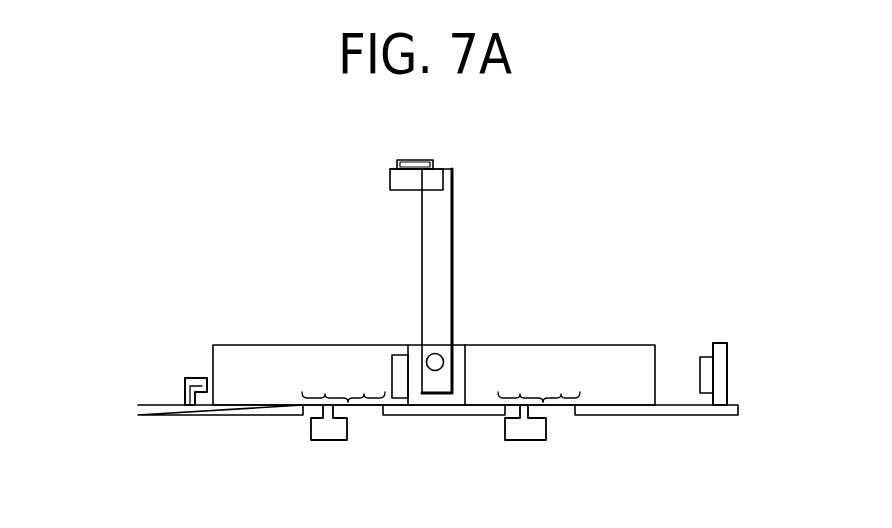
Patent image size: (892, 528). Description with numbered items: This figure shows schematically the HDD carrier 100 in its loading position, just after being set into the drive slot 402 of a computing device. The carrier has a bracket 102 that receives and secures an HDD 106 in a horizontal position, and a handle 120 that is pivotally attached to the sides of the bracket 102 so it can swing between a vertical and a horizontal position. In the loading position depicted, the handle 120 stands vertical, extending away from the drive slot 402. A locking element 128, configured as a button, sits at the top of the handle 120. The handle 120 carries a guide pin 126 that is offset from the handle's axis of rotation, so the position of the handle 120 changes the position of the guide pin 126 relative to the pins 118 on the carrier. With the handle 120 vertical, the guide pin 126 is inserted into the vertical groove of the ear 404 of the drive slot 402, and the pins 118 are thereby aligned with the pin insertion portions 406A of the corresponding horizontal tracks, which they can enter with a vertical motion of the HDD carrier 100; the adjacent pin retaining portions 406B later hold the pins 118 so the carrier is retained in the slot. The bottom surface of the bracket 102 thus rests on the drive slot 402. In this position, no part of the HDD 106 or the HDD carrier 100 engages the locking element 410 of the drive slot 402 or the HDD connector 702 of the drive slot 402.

The HDD carrier 100 is at (624, 213).
The bracket 102 is at (435, 343).
The HDD 106 is at (620, 345).
The pins 118 is at (311, 429).
The handle 120 is at (453, 223).
The guide pin 126 is at (435, 353).
The locking element 128 is at (422, 158).
The drive slot 402 is at (150, 432).
The ear 404 is at (409, 342).
The pin insertion portion 406A is at (326, 394).
The pin retaining portion 406B is at (364, 394).
The locking element 410 is at (185, 390).
The HDD connector 702 is at (706, 356).